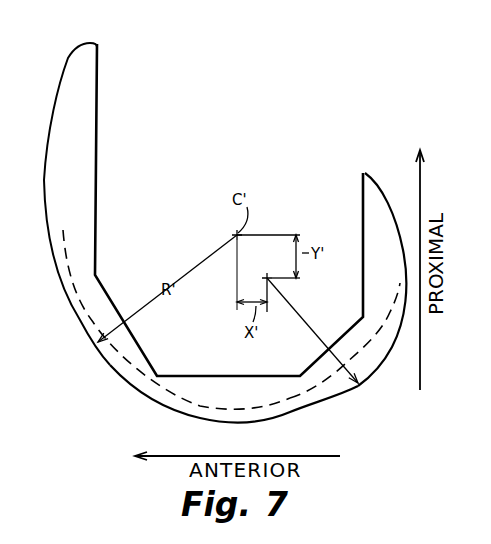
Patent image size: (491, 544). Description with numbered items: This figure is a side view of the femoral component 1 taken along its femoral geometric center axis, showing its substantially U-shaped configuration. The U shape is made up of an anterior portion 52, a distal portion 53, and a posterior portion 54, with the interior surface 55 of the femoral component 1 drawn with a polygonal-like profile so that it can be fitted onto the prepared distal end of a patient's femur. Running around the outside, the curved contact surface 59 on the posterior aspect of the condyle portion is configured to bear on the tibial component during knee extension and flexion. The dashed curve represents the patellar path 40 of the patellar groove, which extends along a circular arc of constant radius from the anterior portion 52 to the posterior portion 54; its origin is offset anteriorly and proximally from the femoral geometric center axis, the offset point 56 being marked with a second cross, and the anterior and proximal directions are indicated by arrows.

The femoral component 1 is at (140, 400).
The patellar path 40 is at (310, 394).
The anterior portion 52 is at (70, 83).
The distal portion 53 is at (240, 412).
The posterior portion 54 is at (383, 225).
The interior surface 55 is at (100, 72).
The offset center point 56 is at (265, 278).
The curved contact surface 59 is at (264, 422).